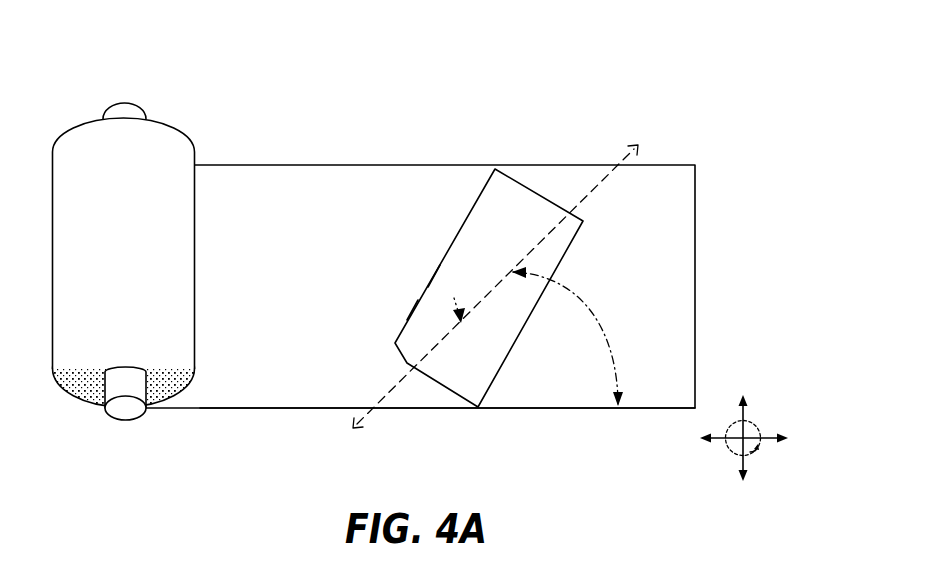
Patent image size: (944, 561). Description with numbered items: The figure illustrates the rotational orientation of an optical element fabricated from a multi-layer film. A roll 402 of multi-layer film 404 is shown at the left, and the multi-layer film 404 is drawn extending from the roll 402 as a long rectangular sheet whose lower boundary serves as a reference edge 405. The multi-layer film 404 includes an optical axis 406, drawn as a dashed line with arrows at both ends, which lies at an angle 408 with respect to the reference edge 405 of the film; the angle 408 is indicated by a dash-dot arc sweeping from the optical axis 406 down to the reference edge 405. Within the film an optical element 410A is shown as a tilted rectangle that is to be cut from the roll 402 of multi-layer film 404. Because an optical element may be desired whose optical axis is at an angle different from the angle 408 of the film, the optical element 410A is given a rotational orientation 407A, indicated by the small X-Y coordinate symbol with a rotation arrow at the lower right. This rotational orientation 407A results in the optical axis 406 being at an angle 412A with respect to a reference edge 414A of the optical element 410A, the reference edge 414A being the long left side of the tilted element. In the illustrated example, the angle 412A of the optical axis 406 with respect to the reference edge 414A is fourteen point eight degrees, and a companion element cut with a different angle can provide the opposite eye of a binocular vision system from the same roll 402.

The roll 402 is at (162, 145).
The multi-layer film 404 is at (688, 198).
The reference edge 405 is at (580, 409).
The optical axis 406 is at (598, 178).
The rotational orientation 407A is at (757, 423).
The angle 408 is at (582, 302).
The optical element 410A is at (483, 222).
The angle 412A is at (450, 290).
The reference edge 414A is at (406, 300).